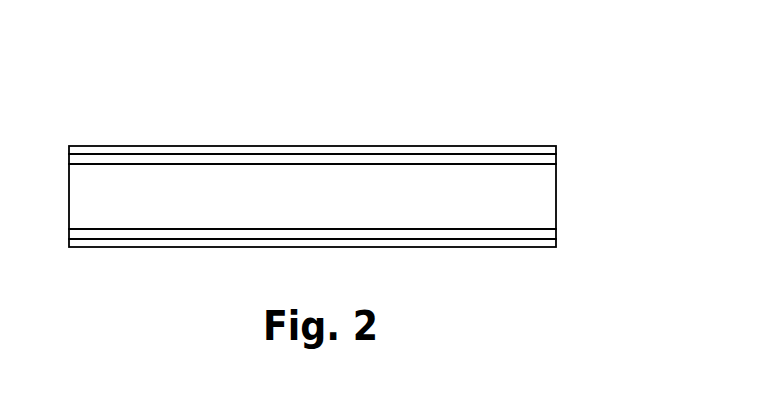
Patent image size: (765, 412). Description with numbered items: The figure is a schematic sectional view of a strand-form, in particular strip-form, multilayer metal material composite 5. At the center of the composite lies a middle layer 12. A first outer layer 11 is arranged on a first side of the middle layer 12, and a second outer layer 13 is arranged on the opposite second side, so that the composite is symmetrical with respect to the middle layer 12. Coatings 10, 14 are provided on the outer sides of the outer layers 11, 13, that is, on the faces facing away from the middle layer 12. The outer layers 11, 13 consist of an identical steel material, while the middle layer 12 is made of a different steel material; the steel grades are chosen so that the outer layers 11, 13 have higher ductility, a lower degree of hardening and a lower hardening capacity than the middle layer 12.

The material composite 5 is at (363, 190).
The coating 10 is at (532, 150).
The first outer layer 11 is at (537, 159).
The middle layer 12 is at (537, 202).
The second outer layer 13 is at (537, 237).
The coating 14 is at (532, 245).